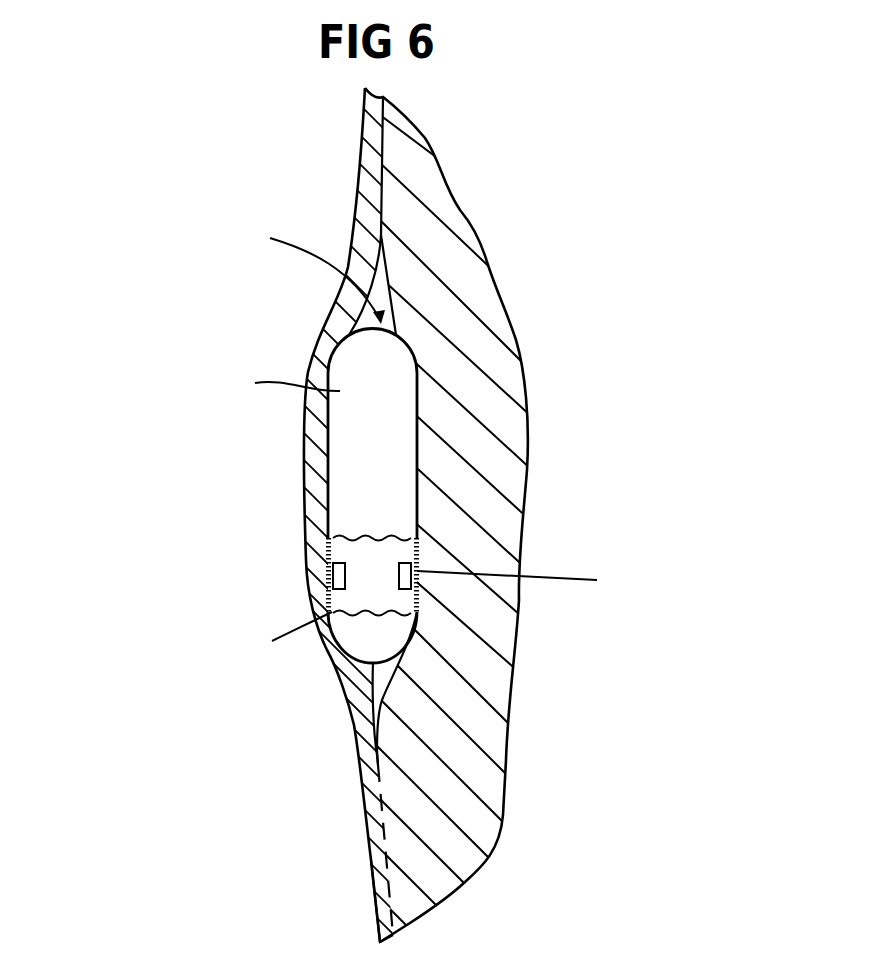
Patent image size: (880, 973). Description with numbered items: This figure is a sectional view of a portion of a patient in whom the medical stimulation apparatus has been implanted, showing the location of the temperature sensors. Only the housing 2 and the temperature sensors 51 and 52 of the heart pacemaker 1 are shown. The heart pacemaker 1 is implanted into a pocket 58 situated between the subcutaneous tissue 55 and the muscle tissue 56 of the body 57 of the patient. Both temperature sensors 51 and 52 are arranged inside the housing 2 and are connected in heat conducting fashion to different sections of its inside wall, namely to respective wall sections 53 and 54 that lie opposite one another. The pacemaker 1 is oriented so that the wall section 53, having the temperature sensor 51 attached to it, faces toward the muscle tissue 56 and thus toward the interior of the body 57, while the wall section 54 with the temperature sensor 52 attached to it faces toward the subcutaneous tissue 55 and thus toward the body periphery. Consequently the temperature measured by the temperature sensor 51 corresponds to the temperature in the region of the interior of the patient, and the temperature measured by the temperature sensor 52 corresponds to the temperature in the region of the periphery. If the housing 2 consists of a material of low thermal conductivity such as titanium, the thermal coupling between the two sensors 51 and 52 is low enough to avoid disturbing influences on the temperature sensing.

The heart pacemaker 1 is at (369, 320).
The housing 2 is at (357, 632).
The temperature sensor 51 is at (417, 578).
The temperature sensor 52 is at (330, 553).
The wall section 53 is at (417, 566).
The wall section 54 is at (330, 590).
The subcutaneous tissue 55 is at (309, 496).
The muscle tissue 56 is at (515, 427).
The body 57 is at (353, 184).
The pocket 58 is at (377, 682).